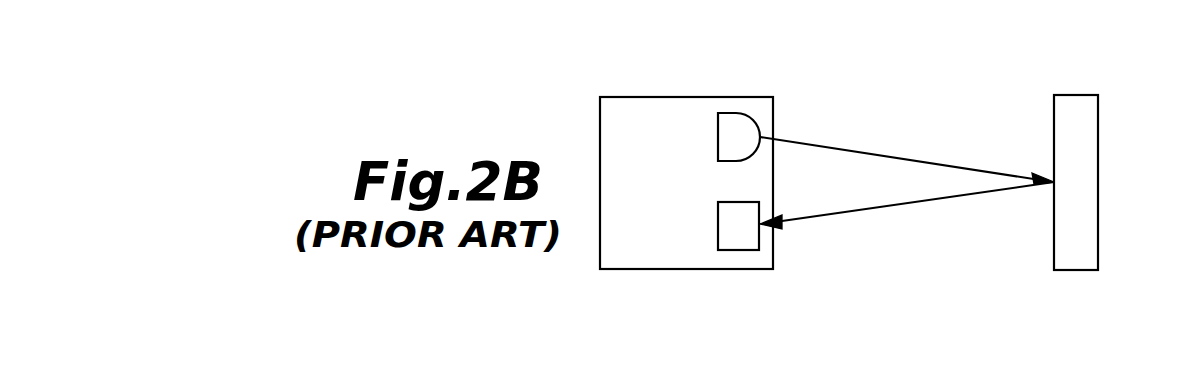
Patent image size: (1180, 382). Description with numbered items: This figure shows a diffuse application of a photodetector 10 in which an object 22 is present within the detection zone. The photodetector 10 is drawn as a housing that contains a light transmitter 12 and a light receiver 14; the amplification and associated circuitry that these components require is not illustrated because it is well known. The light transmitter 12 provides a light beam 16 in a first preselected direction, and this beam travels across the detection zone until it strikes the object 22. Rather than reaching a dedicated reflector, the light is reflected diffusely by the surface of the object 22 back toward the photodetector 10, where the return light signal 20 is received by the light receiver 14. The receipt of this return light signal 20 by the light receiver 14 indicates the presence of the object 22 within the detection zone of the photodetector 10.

The photodetector 10 is at (622, 106).
The light transmitter 12 is at (730, 127).
The light receiver 14 is at (743, 240).
The light beam 16 is at (902, 158).
The return light signal 20 is at (892, 207).
The object 22 is at (1077, 106).